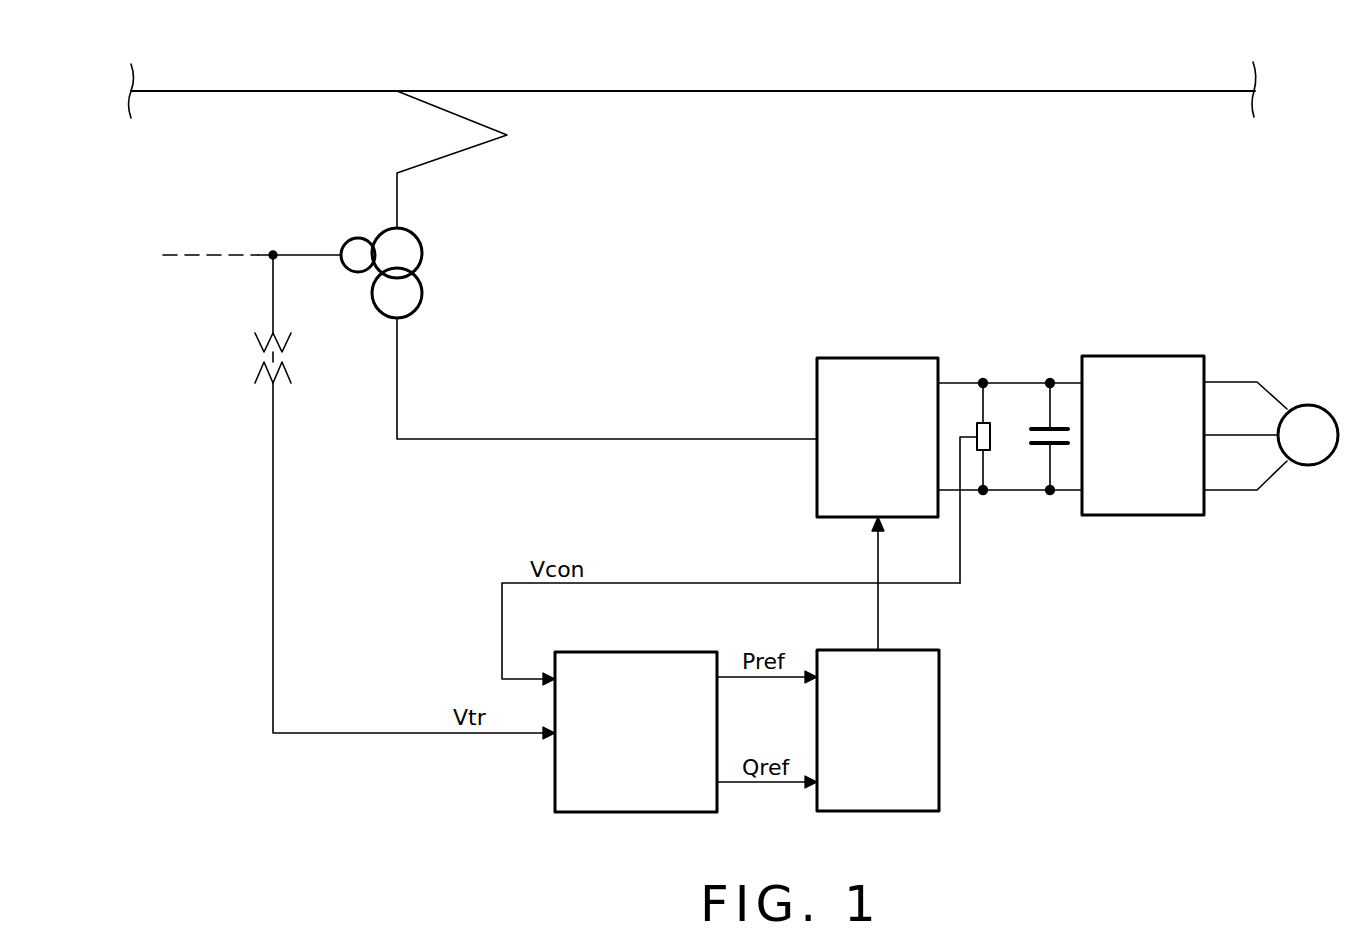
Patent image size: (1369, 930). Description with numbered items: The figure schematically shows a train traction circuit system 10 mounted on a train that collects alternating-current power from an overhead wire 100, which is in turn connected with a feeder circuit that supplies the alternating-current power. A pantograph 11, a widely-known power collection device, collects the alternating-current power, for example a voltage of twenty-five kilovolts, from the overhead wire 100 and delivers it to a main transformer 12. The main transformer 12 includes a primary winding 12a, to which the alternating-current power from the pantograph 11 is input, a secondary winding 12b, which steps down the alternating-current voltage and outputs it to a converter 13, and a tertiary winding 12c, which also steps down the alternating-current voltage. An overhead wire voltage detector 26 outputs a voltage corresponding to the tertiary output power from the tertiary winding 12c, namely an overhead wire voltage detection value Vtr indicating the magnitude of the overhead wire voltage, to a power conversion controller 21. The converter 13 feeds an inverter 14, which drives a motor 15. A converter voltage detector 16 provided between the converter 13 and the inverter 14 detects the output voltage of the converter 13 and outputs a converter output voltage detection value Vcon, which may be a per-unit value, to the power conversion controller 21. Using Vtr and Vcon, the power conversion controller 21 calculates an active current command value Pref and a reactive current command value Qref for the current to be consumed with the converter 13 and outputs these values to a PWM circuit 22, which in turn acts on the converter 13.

The overhead wire 100 is at (940, 90).
The pantograph 11 is at (454, 152).
The main transformer 12 is at (422, 260).
The primary winding 12a is at (415, 229).
The secondary winding 12b is at (417, 315).
The tertiary winding 12c is at (358, 238).
The overhead wire voltage detector 26 is at (286, 341).
The converter 13 is at (900, 358).
The converter voltage detector 16 is at (986, 424).
The inverter 14 is at (1173, 356).
The motor 15 is at (1305, 405).
The train traction circuit system 10 is at (1236, 264).
The power conversion controller 21 is at (660, 652).
The PWM circuit 22 is at (939, 688).